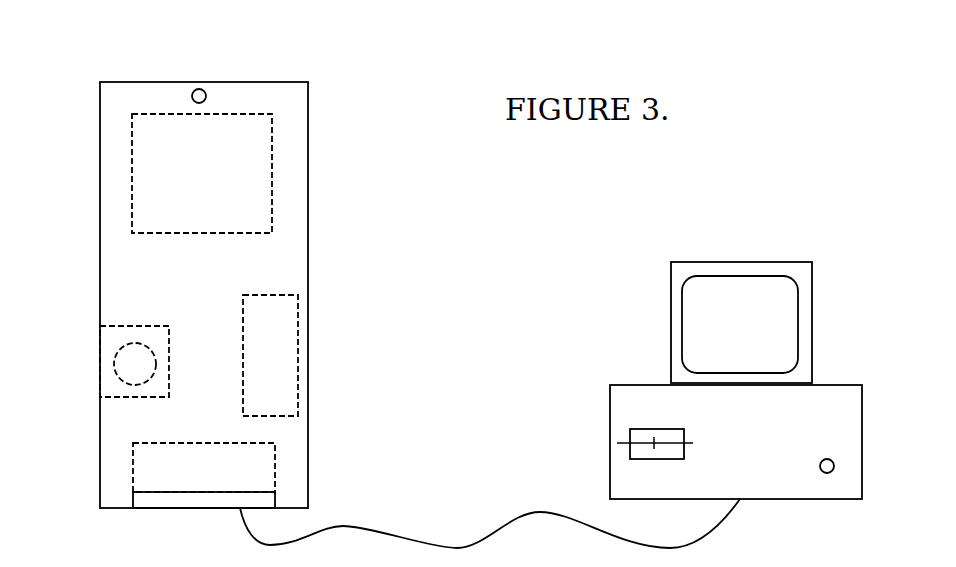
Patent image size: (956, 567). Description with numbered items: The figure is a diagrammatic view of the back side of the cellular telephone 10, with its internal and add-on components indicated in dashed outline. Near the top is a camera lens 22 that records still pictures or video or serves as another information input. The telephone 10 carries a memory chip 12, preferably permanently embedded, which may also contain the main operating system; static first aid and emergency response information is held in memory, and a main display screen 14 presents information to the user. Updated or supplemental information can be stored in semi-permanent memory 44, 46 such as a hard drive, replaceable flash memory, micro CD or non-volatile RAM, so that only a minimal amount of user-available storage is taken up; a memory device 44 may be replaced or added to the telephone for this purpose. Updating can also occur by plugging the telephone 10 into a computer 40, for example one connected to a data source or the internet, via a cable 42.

The telephone 10 is at (354, 149).
The memory chip 12 is at (267, 469).
The main display screen 14 is at (262, 175).
The camera lens 22 is at (210, 93).
The computer 40 is at (778, 257).
The cable 42 is at (455, 539).
The memory device 44 is at (113, 342).
The semi-permanent memory 46 is at (292, 317).